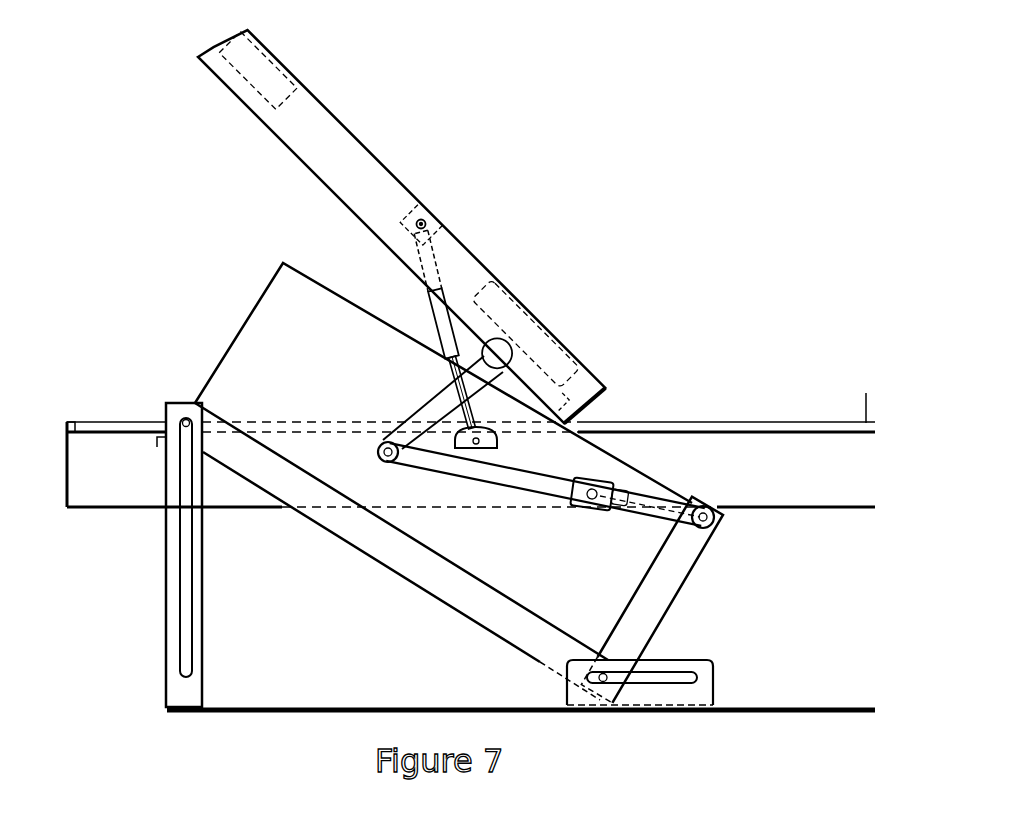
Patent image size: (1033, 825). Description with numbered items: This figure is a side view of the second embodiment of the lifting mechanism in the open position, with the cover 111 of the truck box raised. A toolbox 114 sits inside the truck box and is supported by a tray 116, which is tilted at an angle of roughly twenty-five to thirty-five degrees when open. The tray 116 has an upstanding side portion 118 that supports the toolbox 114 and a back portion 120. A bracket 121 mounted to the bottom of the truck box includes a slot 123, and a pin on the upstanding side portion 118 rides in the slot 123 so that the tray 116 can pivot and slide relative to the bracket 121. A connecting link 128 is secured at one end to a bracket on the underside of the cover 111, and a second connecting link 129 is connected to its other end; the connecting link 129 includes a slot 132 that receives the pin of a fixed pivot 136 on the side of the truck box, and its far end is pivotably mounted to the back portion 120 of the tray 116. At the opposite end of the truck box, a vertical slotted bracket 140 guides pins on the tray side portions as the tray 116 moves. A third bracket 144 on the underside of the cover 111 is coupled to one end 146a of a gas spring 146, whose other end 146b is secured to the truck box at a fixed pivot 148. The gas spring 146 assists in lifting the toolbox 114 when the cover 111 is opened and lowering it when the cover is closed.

The cover 111 is at (503, 290).
The toolbox 114 is at (240, 347).
The tray 116 is at (292, 517).
The upstanding side portion 118 is at (375, 547).
The back portion 120 is at (657, 597).
The bracket 121 is at (702, 697).
The slot 123 is at (672, 672).
The connecting link 128 is at (415, 408).
The connecting link 129 is at (462, 478).
The slot 132 is at (650, 490).
The fixed pivot 136 is at (573, 508).
The vertical slotted bracket 140 is at (193, 612).
The third bracket 144 is at (428, 214).
The gas spring 146 is at (423, 298).
The one end of gas spring 146a is at (455, 224).
The other end of gas spring 146b is at (511, 419).
The fixed pivot 148 is at (497, 441).